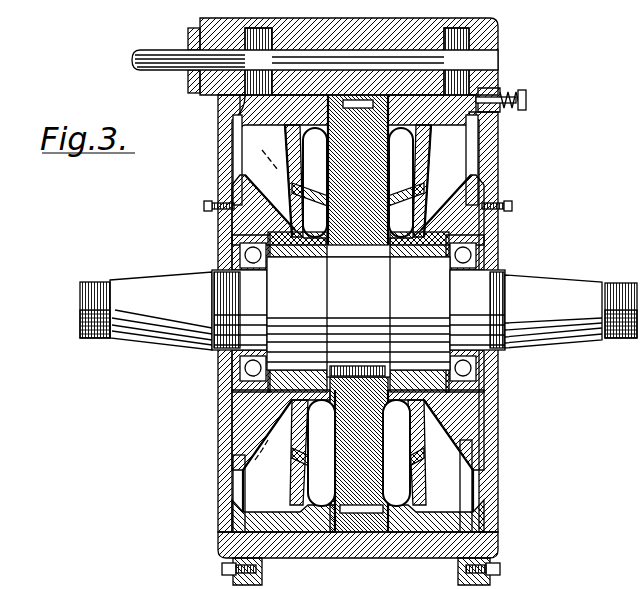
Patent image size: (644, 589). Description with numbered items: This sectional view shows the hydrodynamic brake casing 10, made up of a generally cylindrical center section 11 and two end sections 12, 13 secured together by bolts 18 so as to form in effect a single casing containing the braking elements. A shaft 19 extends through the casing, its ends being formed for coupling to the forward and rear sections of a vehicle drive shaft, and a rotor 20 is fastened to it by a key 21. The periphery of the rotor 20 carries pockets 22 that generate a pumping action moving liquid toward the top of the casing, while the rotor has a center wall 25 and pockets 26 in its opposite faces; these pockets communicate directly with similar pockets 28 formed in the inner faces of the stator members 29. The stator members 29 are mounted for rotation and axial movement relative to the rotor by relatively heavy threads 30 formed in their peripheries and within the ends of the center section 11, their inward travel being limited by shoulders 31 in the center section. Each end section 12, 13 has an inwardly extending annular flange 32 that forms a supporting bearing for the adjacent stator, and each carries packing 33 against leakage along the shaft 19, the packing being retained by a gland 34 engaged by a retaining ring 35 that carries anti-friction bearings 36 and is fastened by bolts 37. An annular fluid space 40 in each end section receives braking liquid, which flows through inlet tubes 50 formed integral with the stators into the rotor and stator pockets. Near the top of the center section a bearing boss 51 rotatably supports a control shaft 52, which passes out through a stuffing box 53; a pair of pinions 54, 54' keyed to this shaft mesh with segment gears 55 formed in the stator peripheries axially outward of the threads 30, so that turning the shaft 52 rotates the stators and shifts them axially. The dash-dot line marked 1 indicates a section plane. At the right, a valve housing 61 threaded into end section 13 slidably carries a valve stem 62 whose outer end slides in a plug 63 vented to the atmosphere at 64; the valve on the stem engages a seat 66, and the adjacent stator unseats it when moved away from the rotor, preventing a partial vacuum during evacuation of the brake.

The drive shaft 1 is at (310, 63).
The brake casing 10 is at (356, 303).
The center section 11 is at (412, 560).
The end section 12 is at (218, 498).
The end section 13 is at (500, 492).
The bolts 18 is at (222, 570).
The shaft 19 is at (160, 345).
The rotor 20 is at (362, 257).
The key 21 is at (358, 366).
The pockets 22 is at (376, 480).
The center wall 25 is at (350, 458).
The pockets 26 is at (358, 182).
The pockets 28 is at (288, 162).
The stator members 29 is at (448, 520).
The threads 30 is at (314, 72).
The shoulders 31 is at (334, 72).
The annular flange 32 is at (358, 313).
The packing 33 is at (292, 365).
The gland 34 is at (358, 312).
The retaining ring 35 is at (218, 238).
The anti-friction bearings 36 is at (232, 355).
The bolts 37 is at (204, 207).
The fluid space 40 is at (233, 534).
The inlet tubes 50 is at (442, 440).
The bearing boss 51 is at (382, 30).
The control shaft 52 is at (155, 70).
The stuffing box 53 is at (190, 93).
The pinions 54 is at (367, 56).
The bushing 54' is at (351, 61).
The segment gear 55 is at (215, 105).
The valve housing 61 is at (510, 86).
The valve stem 62 is at (526, 97).
The plug 63 is at (524, 106).
The vent 64 is at (522, 90).
The seat 66 is at (496, 112).